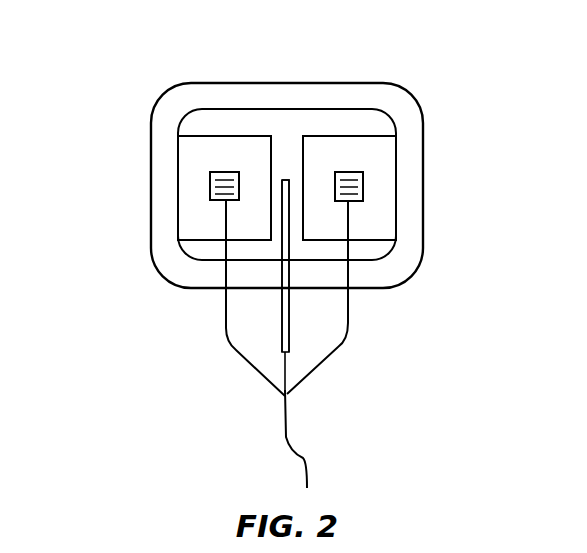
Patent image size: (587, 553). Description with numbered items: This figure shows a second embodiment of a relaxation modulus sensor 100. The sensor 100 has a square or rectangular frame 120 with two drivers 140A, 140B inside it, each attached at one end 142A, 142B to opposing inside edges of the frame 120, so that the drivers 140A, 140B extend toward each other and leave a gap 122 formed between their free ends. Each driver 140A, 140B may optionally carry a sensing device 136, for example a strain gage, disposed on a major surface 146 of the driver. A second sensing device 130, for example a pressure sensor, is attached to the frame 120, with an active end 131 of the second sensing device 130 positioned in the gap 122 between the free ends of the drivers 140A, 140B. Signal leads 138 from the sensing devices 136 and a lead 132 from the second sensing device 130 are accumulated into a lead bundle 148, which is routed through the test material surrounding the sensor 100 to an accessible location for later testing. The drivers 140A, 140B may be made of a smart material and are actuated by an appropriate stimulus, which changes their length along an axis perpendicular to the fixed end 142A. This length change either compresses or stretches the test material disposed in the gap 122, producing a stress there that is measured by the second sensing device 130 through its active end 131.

The relaxation modulus sensor 100 is at (433, 89).
The frame 120 is at (342, 97).
The gap 122 is at (282, 169).
The second sensing device 130 is at (290, 200).
The active end 131 is at (282, 181).
The lead 132 is at (286, 360).
The sensing device 136 is at (363, 187).
The signal leads 138 is at (348, 210).
The driver 140A is at (245, 148).
The driver 140B is at (323, 150).
The end 142A is at (178, 184).
The end 142B is at (396, 160).
The major surface 146 is at (363, 145).
The lead bundle 148 is at (285, 421).